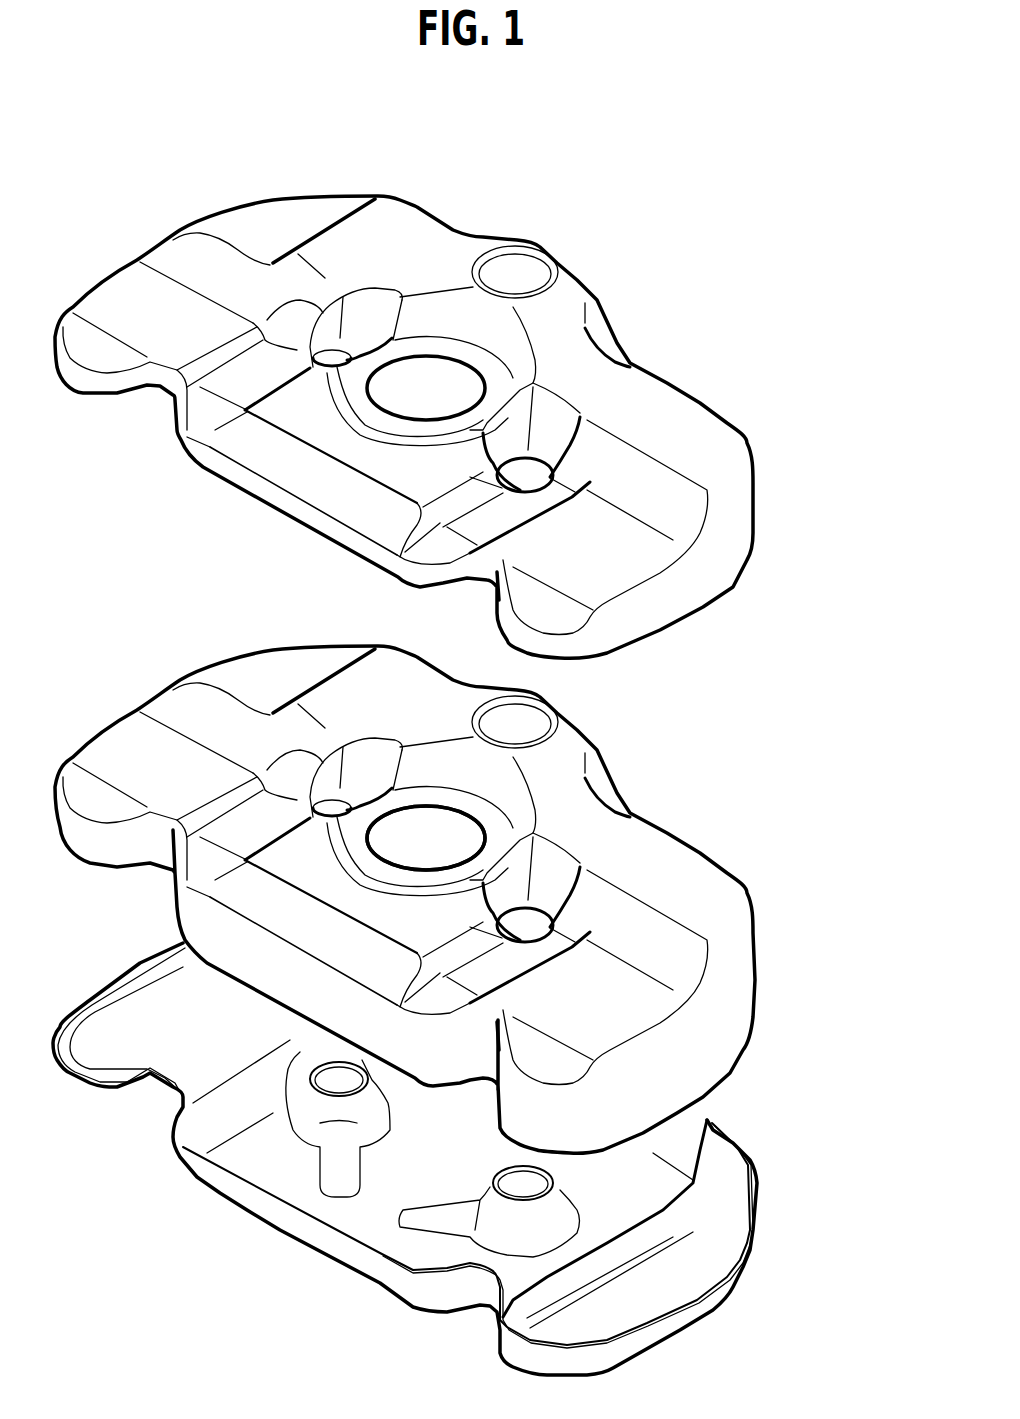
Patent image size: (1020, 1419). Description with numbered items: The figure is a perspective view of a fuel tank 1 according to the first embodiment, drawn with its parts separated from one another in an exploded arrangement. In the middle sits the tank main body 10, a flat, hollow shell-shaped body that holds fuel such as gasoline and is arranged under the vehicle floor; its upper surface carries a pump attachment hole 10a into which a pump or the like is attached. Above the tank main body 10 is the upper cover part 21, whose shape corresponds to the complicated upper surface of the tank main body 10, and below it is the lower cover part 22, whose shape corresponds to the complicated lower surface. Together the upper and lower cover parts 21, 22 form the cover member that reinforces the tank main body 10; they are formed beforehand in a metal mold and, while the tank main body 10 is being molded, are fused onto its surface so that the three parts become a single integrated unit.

The fuel tank 1 is at (630, 198).
The tank main body 10 is at (443, 899).
The pump attachment hole 10a is at (587, 797).
The upper cover part 21 is at (737, 511).
The lower cover part 22 is at (723, 1288).